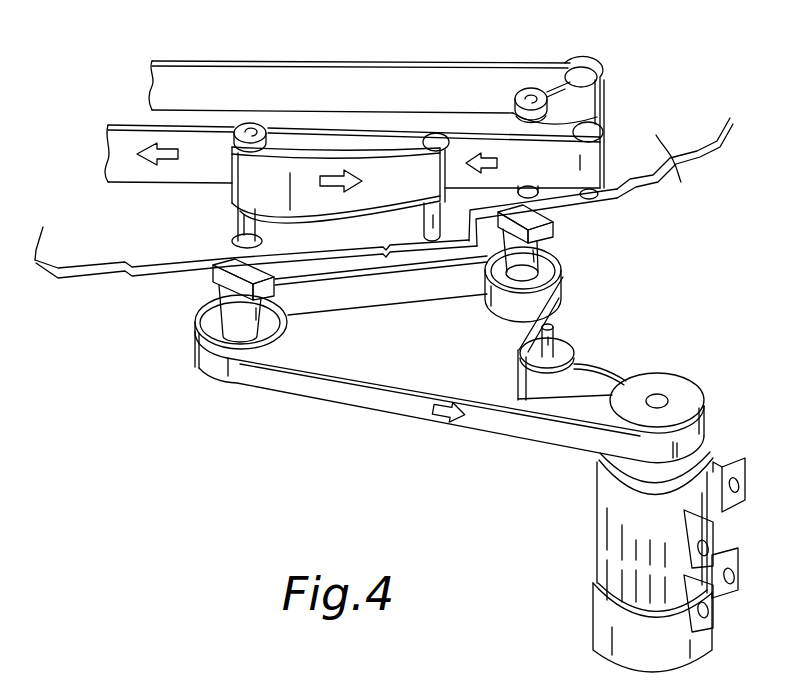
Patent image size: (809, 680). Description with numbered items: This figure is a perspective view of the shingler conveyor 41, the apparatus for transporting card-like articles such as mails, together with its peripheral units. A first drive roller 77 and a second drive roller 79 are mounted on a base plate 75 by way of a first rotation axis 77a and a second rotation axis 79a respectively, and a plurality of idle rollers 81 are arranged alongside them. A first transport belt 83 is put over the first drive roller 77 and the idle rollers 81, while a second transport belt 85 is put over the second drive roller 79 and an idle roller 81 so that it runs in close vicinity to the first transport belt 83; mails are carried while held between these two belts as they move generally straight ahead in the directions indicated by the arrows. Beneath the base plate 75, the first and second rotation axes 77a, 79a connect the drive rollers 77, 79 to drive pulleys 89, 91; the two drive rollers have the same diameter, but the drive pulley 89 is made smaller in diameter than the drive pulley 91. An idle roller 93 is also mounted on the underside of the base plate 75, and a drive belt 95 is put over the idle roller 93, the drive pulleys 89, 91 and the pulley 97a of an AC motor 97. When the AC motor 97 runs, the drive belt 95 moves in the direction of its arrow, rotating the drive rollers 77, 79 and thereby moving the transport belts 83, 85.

The shingler conveyor 41 is at (407, 470).
The base plate 75 is at (675, 158).
The first drive roller 77 is at (531, 89).
The first rotation axis 77a is at (550, 197).
The second drive roller 79 is at (248, 124).
The second rotation axis 79a is at (236, 229).
The idle rollers 81 is at (434, 134).
The first transport belt 83 is at (371, 63).
The second transport belt 85 is at (232, 197).
The drive pulley 89 is at (562, 272).
The drive pulley 91 is at (282, 346).
The idle roller 93 is at (568, 351).
The drive belt 95 is at (372, 395).
The AC motor 97 is at (602, 632).
The pulley 97a is at (676, 392).